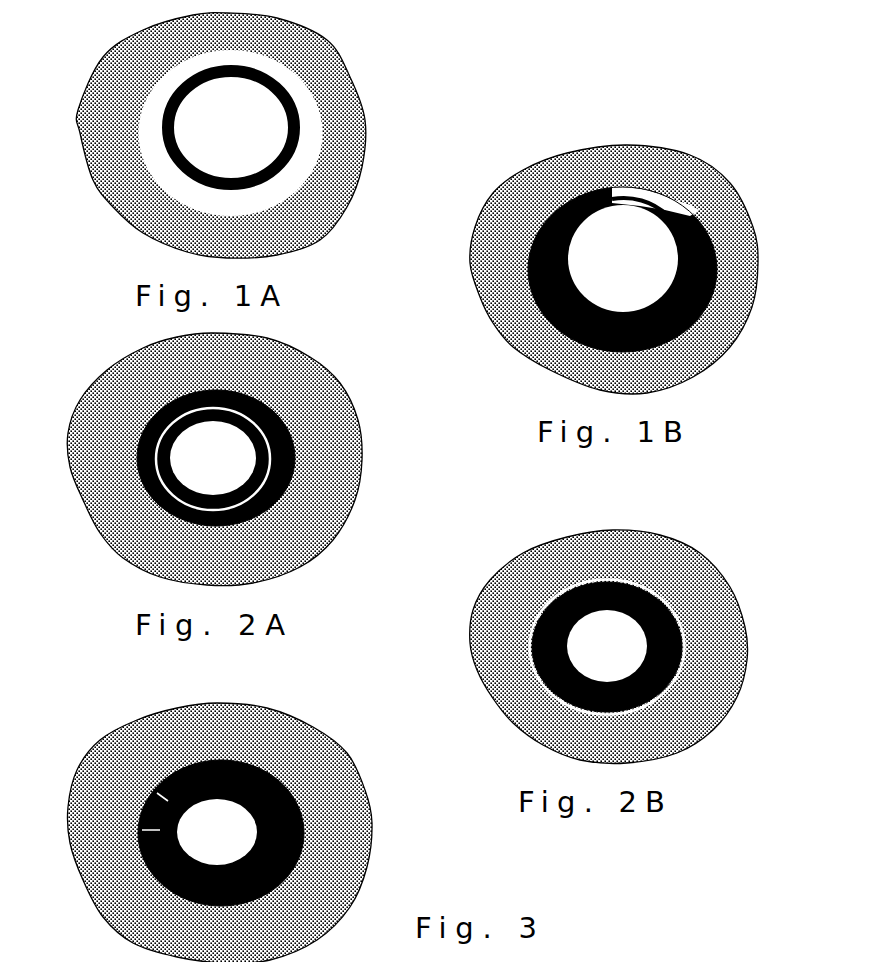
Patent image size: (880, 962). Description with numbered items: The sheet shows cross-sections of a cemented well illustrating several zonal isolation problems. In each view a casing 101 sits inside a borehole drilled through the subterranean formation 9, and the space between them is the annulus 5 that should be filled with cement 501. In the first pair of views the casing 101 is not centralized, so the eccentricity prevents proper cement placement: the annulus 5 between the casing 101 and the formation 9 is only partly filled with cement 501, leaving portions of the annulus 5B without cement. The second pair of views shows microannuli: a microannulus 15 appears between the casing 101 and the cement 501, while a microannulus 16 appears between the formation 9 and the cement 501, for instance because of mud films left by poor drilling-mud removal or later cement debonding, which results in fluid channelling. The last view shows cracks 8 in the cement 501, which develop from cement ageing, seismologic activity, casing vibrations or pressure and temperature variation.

In FIG. 1A, the subterranean formation 9 is at (357, 133).
In FIG. 1B, the subterranean formation 9 is at (733, 282).
In FIG. 2A, the subterranean formation 9 is at (317, 508).
In FIG. 2B, the subterranean formation 9 is at (703, 690).
In FIG. 3, the subterranean formation 9 is at (327, 882).
In FIG. 1A, the casing 101 is at (285, 83).
In FIG. 1B, the casing 101 is at (703, 225).
In FIG. 2A, the casing 101 is at (262, 405).
In FIG. 2B, the casing 101 is at (650, 592).
In FIG. 3, the casing 101 is at (270, 770).
In FIG. 1A, the annulus 5 is at (153, 157).
In FIG. 1B, the portions of the annulus not filled with cement 5B is at (660, 195).
In FIG. 1B, the cement 501 is at (718, 255).
In FIG. 2A, the cement 501 is at (297, 455).
In FIG. 2B, the cement 501 is at (682, 638).
In FIG. 3, the cement 501 is at (307, 827).
In FIG. 2A, the microannulus 15 is at (137, 443).
In FIG. 2B, the microannulus 16 is at (565, 588).
In FIG. 3, the cracks 8 is at (160, 793).